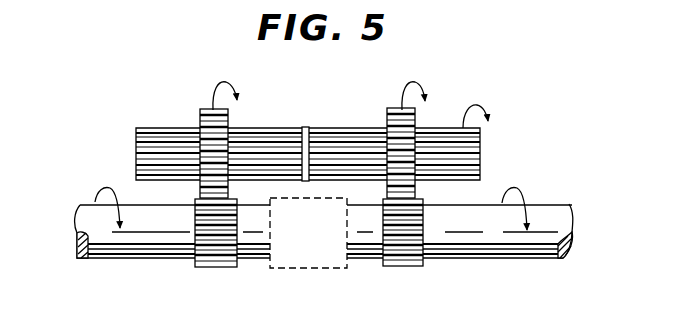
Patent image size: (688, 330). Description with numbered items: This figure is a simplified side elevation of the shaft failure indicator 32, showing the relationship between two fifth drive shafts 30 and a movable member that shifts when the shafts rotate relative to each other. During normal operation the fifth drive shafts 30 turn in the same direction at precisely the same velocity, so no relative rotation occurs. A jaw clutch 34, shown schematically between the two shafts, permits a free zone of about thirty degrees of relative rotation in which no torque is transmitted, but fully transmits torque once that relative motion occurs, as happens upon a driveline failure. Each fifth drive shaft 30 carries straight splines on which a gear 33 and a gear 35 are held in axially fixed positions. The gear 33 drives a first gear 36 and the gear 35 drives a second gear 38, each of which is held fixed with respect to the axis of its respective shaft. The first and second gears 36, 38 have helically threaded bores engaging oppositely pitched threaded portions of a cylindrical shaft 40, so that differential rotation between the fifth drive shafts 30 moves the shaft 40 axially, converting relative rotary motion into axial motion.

The fifth drive shafts 30 is at (128, 259).
The shaft failure indicator 32 is at (313, 108).
The gear 33 is at (222, 268).
The jaw clutch 34 is at (310, 268).
The gear 35 is at (401, 267).
The first gear 36 is at (228, 121).
The second gear 38 is at (413, 118).
The cylindrical shaft 40 is at (134, 157).